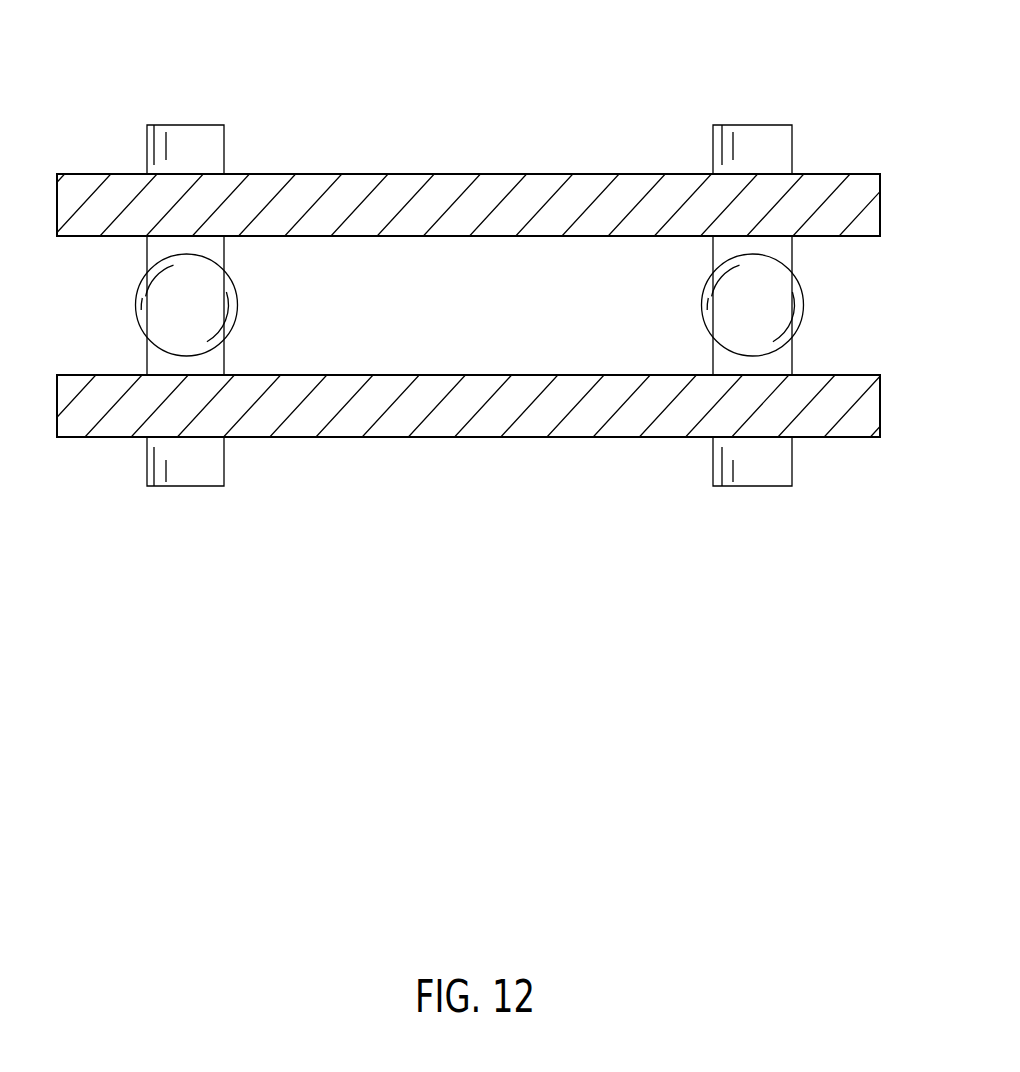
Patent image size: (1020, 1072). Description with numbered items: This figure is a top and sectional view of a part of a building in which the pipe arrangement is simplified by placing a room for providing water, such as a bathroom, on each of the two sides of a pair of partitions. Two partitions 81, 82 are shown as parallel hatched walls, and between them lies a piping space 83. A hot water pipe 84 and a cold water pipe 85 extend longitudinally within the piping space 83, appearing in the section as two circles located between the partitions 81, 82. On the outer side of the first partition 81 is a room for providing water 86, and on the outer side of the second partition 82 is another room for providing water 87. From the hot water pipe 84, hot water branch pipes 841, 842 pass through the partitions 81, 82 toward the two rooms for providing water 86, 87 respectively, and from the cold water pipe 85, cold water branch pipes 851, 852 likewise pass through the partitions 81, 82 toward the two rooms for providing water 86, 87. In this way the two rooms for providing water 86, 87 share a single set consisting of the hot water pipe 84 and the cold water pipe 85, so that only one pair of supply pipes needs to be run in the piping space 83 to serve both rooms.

The partition 81 is at (860, 197).
The partition 82 is at (827, 420).
The piping space 83 is at (484, 321).
The hot water pipe 84 is at (134, 307).
The cold water pipe 85 is at (804, 308).
The room for providing water 86 is at (484, 50).
The room for providing water 87 is at (485, 549).
The hot water branch pipe 841 is at (187, 140).
The hot water branch pipe 842 is at (179, 486).
The cold water branch pipe 851 is at (755, 140).
The cold water branch pipe 852 is at (753, 486).